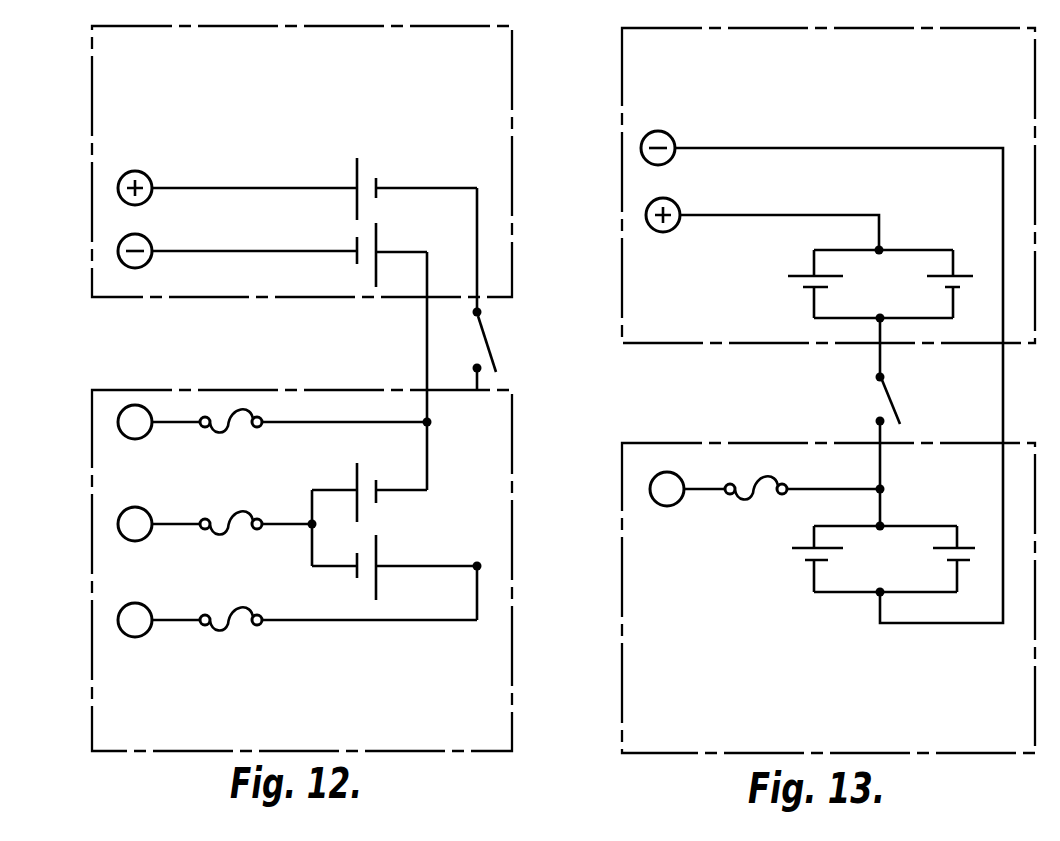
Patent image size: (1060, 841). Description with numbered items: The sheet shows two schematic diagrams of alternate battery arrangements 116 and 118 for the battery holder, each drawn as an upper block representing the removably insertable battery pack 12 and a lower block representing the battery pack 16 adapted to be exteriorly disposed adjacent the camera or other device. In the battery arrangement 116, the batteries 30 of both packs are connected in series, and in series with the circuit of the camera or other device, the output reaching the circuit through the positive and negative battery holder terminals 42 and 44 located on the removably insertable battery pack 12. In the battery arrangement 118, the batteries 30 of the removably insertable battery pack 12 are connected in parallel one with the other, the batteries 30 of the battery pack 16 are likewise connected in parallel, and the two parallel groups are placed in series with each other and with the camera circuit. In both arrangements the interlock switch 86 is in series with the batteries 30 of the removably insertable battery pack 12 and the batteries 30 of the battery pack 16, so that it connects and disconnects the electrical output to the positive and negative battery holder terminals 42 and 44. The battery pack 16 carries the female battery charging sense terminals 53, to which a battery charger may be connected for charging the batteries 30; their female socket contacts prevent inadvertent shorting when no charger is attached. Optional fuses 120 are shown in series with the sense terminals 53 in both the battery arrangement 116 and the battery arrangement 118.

In FIG. 12, the battery arrangement 116 is at (257, 193).
In FIG. 13, the battery arrangement 118 is at (784, 212).
In FIG. 12, the removably insertable battery pack 12 is at (226, 297).
In FIG. 13, the removably insertable battery pack 12 is at (801, 347).
In FIG. 12, the battery pack adapted to be exteriorly disposed 16 is at (377, 389).
In FIG. 13, the battery pack adapted to be exteriorly disposed 16 is at (818, 441).
In FIG. 12, the positive battery holder terminal 42 is at (148, 178).
In FIG. 13, the positive battery holder terminal 42 is at (677, 204).
In FIG. 12, the negative battery holder terminal 44 is at (149, 240).
In FIG. 13, the negative battery holder terminal 44 is at (671, 136).
In FIG. 12, the batteries 30 is at (378, 183).
In FIG. 13, the batteries 30 is at (802, 273).
In FIG. 12, the interlock switch 86 is at (492, 341).
In FIG. 13, the interlock switch 86 is at (892, 398).
In FIG. 12, the battery charging sense terminals 53 is at (137, 440).
In FIG. 13, the battery charging sense terminals 53 is at (667, 507).
In FIG. 12, the fuses 120 is at (236, 428).
In FIG. 13, the fuses 120 is at (768, 500).